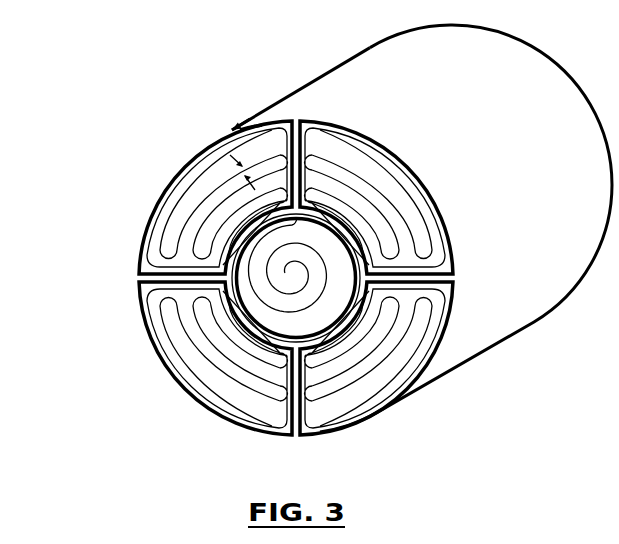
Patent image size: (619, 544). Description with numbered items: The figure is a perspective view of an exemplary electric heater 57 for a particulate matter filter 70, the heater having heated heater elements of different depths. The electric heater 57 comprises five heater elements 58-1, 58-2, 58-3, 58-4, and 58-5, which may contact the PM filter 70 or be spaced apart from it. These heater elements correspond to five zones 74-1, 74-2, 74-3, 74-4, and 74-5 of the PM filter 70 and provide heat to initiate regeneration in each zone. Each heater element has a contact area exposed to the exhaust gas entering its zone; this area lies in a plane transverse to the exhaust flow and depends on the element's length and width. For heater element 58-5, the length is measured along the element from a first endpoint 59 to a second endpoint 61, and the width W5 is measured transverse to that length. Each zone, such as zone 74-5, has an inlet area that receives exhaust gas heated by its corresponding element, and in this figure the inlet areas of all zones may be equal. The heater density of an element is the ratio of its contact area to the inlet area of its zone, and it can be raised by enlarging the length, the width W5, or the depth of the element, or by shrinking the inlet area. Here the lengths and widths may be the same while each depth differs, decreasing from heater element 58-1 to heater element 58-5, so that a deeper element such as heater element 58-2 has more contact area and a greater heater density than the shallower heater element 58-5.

The electric heater 57 is at (120, 117).
The PM filter 70 is at (333, 68).
The first endpoint 59 is at (247, 125).
The second endpoint 61 is at (268, 120).
The width of heater element 58-5 W5 is at (231, 160).
The heater element 58-1 is at (313, 320).
The heater element 58-2 is at (423, 232).
The heater element 58-3 is at (403, 357).
The heater element 58-4 is at (173, 332).
The heater element 58-5 is at (163, 240).
The zone 74-1 is at (295, 265).
The zone 74-2 is at (374, 197).
The zone 74-3 is at (374, 358).
The zone 74-4 is at (217, 358).
The zone 74-5 is at (217, 197).